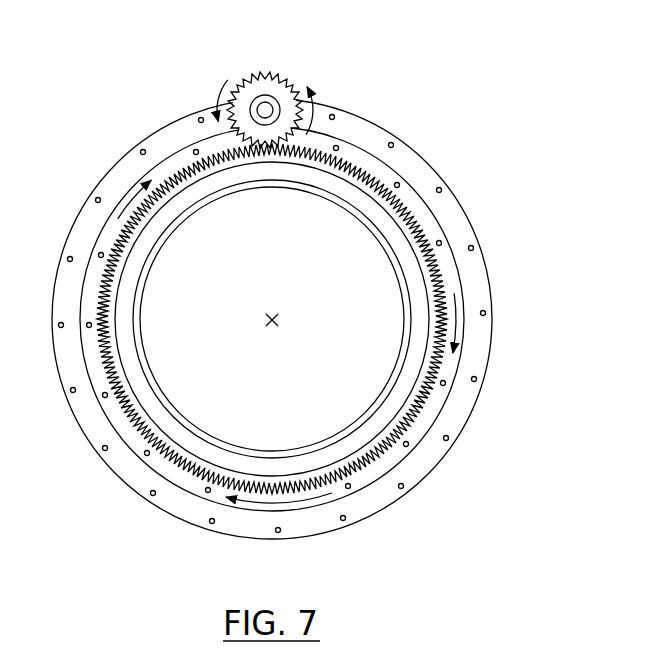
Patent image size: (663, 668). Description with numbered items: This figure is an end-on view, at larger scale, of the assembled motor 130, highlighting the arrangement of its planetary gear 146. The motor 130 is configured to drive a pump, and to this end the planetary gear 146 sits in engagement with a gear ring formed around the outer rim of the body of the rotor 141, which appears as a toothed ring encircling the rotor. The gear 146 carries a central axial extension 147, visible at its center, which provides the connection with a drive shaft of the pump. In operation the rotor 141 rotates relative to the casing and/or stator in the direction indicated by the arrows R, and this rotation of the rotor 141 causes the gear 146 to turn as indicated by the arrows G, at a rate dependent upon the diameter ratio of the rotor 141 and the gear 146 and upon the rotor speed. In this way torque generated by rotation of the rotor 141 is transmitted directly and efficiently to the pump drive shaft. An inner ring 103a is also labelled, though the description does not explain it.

The motor 130 is at (417, 100).
The rotor 141 is at (368, 180).
The planetary gear 146 is at (287, 70).
The central axial extension 147 is at (260, 96).
The inner ring 103a is at (358, 380).
The arrows indicating rotor rotation R is at (122, 200).
The arrows indicating gear rotation G is at (218, 88).